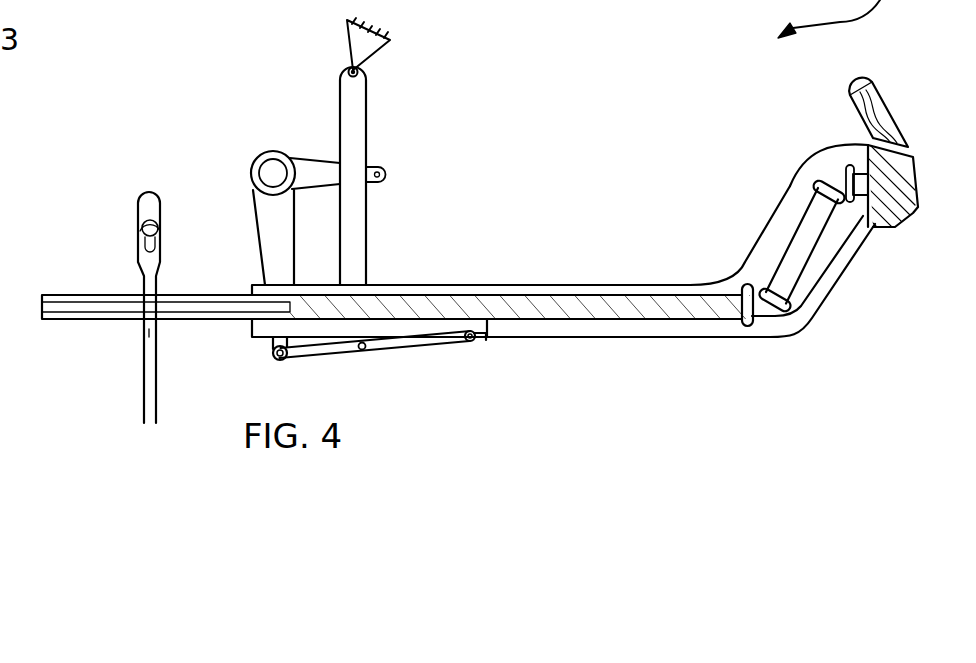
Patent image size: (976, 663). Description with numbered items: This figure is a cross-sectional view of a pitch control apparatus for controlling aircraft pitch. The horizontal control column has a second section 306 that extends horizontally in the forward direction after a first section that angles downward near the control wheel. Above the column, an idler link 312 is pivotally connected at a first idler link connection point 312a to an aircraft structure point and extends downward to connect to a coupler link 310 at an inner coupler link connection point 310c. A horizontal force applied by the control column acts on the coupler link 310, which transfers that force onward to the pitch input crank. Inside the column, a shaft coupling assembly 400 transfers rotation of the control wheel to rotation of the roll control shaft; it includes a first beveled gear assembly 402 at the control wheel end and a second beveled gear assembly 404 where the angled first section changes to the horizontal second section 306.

The second section of the horizontal control column 306 is at (625, 332).
The coupler link 310 is at (429, 343).
The inner coupler link connection point 310c is at (363, 353).
The idler link 312 is at (355, 125).
The first idler link connection point 312a is at (357, 77).
The shaft coupling assembly 400 is at (795, 245).
The first beveled gear assembly 402 is at (822, 175).
The second beveled gear assembly 404 is at (748, 288).